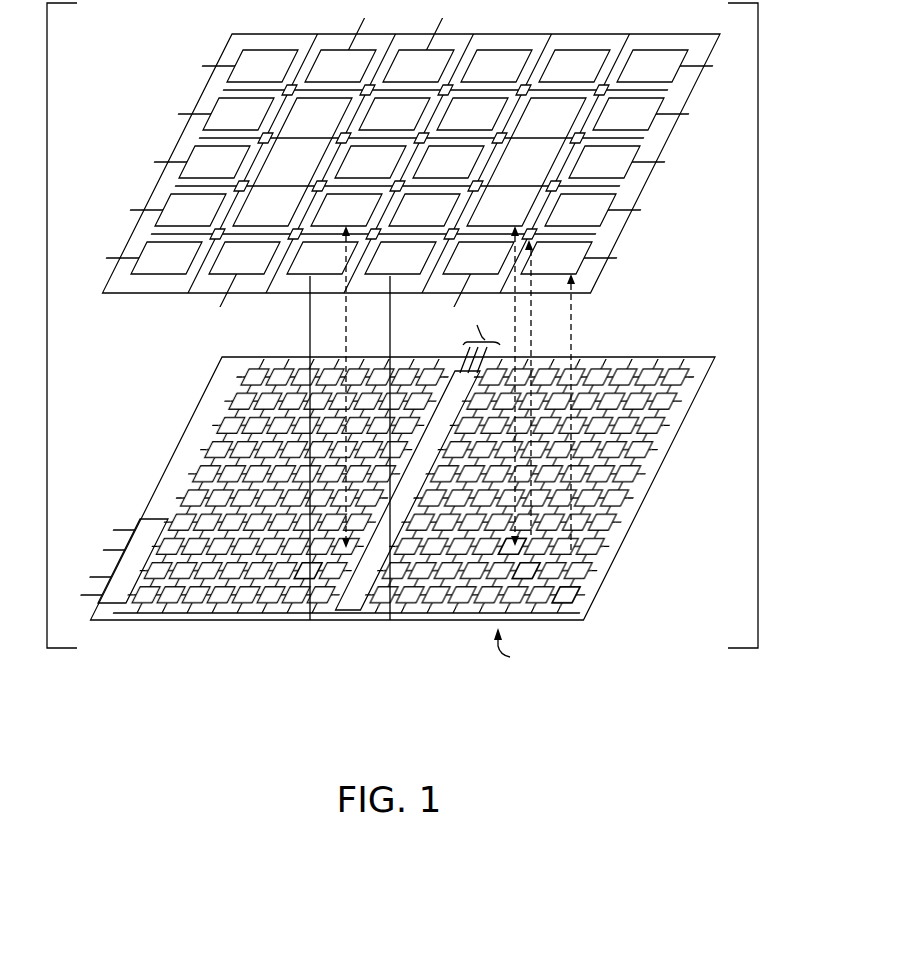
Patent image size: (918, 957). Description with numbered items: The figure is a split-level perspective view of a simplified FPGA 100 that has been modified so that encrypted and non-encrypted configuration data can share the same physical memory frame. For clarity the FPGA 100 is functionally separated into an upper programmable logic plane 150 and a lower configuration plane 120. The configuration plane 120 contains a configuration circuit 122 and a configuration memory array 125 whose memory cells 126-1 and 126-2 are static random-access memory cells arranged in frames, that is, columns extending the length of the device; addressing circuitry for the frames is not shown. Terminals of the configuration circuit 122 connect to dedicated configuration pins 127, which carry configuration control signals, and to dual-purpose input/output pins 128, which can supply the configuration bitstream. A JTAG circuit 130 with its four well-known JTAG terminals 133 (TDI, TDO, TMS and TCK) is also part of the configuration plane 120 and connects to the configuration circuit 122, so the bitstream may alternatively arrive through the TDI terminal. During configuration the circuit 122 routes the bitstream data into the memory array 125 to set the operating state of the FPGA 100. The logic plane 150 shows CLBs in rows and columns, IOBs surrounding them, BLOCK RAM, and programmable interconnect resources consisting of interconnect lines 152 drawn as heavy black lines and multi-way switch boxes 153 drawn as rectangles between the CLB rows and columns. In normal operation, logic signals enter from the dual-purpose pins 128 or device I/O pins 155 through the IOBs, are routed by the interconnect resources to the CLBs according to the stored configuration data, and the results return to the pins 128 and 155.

The FPGA 100 is at (760, 80).
The configuration plane 120 is at (633, 520).
The configuration circuit 122 is at (362, 607).
The configuration memory array 125 is at (517, 650).
The memory cells 126-1 is at (570, 590).
The memory cells 126-2 is at (312, 575).
The dedicated configuration pins 127 is at (480, 336).
The dual-purpose input/output pins 128 is at (312, 278).
The JTAG circuit 130 is at (145, 516).
The JTAG terminals 133 is at (76, 602).
The programmable logic plane 150 is at (623, 229).
The interconnect lines 152 is at (620, 57).
The multi-way switch boxes 153 is at (613, 88).
The device I/O pins 155 is at (160, 113).